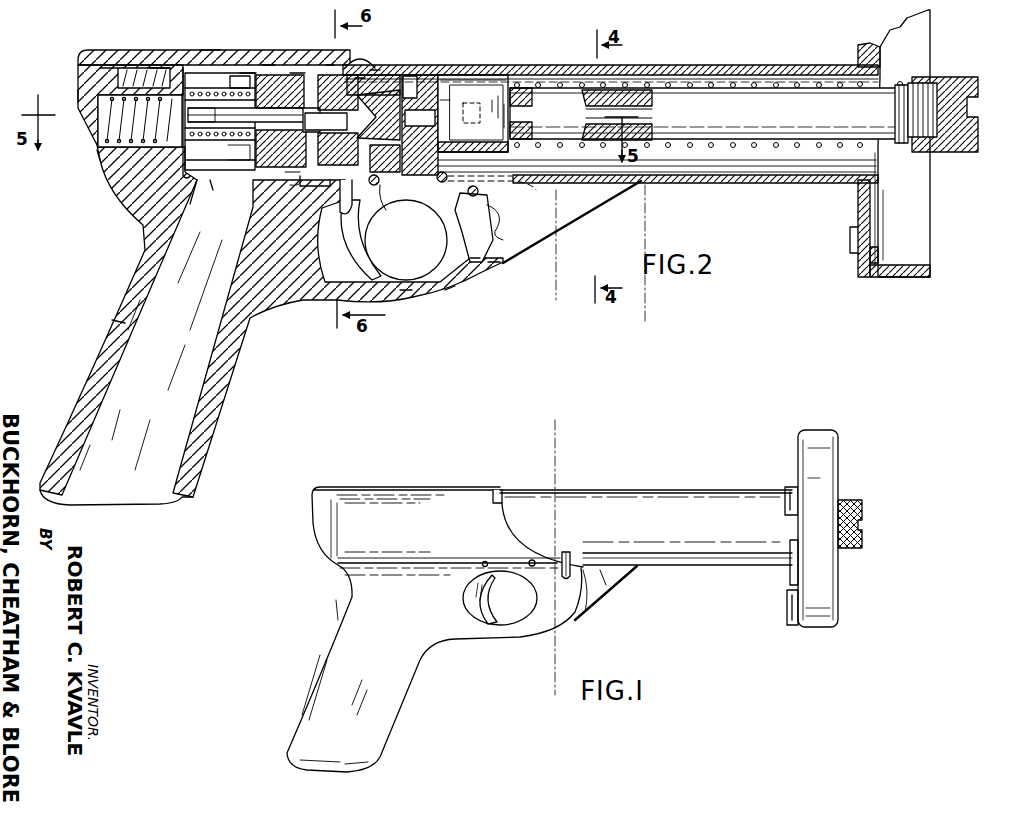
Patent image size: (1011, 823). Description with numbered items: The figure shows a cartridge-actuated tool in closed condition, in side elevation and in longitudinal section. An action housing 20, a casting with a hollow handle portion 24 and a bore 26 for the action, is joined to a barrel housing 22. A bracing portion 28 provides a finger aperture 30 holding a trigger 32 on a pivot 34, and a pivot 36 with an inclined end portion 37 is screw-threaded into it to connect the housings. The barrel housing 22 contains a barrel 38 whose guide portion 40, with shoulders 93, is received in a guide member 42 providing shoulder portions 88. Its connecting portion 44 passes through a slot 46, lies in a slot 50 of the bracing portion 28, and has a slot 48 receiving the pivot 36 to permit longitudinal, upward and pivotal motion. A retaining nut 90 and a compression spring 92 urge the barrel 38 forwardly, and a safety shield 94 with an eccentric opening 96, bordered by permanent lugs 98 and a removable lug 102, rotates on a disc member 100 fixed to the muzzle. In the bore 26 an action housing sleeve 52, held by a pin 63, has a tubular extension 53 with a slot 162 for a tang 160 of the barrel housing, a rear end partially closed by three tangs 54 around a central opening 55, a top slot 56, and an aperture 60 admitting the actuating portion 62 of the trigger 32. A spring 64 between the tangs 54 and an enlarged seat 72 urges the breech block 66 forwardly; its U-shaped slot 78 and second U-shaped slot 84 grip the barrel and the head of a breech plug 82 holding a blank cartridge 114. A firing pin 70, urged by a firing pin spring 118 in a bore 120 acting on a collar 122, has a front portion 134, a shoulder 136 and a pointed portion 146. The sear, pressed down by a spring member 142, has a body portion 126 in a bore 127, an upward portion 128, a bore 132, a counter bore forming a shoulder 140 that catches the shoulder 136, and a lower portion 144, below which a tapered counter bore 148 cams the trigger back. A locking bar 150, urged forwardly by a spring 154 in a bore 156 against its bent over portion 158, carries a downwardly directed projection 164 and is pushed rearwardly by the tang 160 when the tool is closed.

In FIG. 2, the action housing 20 is at (210, 49).
In FIG. 1, the action housing 20 is at (414, 483).
In FIG. 2, the barrel housing 22 is at (755, 65).
In FIG. 1, the barrel housing 22 is at (669, 489).
In FIG. 2, the hollow handle portion 24 is at (110, 318).
In FIG. 1, the hollow handle portion 24 is at (336, 658).
In FIG. 2, the bore 26 is at (212, 183).
In FIG. 2, the bracing portion 28 is at (450, 290).
In FIG. 1, the bracing portion 28 is at (590, 592).
In FIG. 2, the finger aperture 30 is at (405, 292).
In FIG. 2, the trigger 32 is at (376, 272).
In FIG. 1, the trigger 32 is at (478, 630).
In FIG. 2, the pivot 34 is at (372, 216).
In FIG. 1, the pivot 34 is at (490, 585).
In FIG. 2, the pivot 36 is at (497, 216).
In FIG. 1, the pivot 36 is at (580, 590).
In FIG. 1, the inclined end portion 37 is at (606, 580).
In FIG. 2, the barrel 38 is at (796, 139).
In FIG. 2, the guide portion 40 is at (505, 76).
In FIG. 2, the guide member 42 is at (485, 90).
In FIG. 2, the connecting portion 44 is at (549, 222).
In FIG. 1, the connecting portion 44 is at (629, 573).
In FIG. 2, the slot 46 is at (528, 190).
In FIG. 2, the slot 48 is at (490, 263).
In FIG. 2, the slot 50 is at (478, 262).
In FIG. 2, the action housing sleeve 52 is at (188, 198).
In FIG. 2, the tubular extension 53 is at (386, 200).
In FIG. 1, the tubular extension 53 is at (503, 491).
In FIG. 2, the tangs 54 is at (220, 121).
In FIG. 2, the central opening 55 is at (201, 116).
In FIG. 2, the slot 56 is at (252, 71).
In FIG. 2, the aperture 60 is at (285, 176).
In FIG. 2, the actuating portion 62 is at (289, 187).
In FIG. 2, the pin 63 is at (446, 196).
In FIG. 1, the pin 63 is at (534, 560).
In FIG. 2, the spring 64 is at (239, 151).
In FIG. 2, the breech block 66 is at (300, 72).
In FIG. 2, the firing pin rod 70 is at (246, 116).
In FIG. 2, the enlarged rearward bore end 72 is at (237, 88).
In FIG. 2, the U-shaped slot 78 is at (436, 180).
In FIG. 2, the breech plug 82 is at (401, 77).
In FIG. 2, the second U-shaped slot 84 is at (448, 147).
In FIG. 2, the shoulder portions 88 is at (505, 158).
In FIG. 2, the retaining nut 90 is at (963, 77).
In FIG. 1, the retaining nut 90 is at (850, 501).
In FIG. 2, the compression spring 92 is at (705, 82).
In FIG. 2, the shoulders 93 is at (452, 76).
In FIG. 2, the safety shield 94 is at (914, 284).
In FIG. 1, the safety shield 94 is at (839, 433).
In FIG. 2, the eccentric circular opening 96 is at (877, 248).
In FIG. 2, the permanent lugs 98 is at (856, 250).
In FIG. 1, the permanent lugs 98 is at (787, 612).
In FIG. 2, the disc member 100 is at (860, 201).
In FIG. 1, the disc member 100 is at (790, 580).
In FIG. 1, the removable lug 102 is at (789, 498).
In FIG. 2, the blank cartridge 114 is at (441, 100).
In FIG. 2, the firing pin spring 118 is at (78, 97).
In FIG. 2, the bore 120 is at (96, 160).
In FIG. 2, the collar 122 is at (140, 121).
In FIG. 2, the central body portion 126 is at (361, 77).
In FIG. 2, the circular bore 127 is at (300, 178).
In FIG. 2, the upwardly extending cylindrical portion 128 is at (336, 76).
In FIG. 2, the circular bore 132 is at (388, 184).
In FIG. 2, the front portion 134 is at (326, 121).
In FIG. 2, the shoulder 136 is at (280, 91).
In FIG. 2, the shoulder 140 is at (295, 120).
In FIG. 2, the spring member 142 is at (330, 64).
In FIG. 2, the lower portion 144 is at (348, 192).
In FIG. 2, the pointed portion 146 is at (373, 123).
In FIG. 2, the outwardly tapered counter bore 148 is at (281, 148).
In FIG. 2, the locking bar 150 is at (186, 70).
In FIG. 2, the spring 154 is at (130, 68).
In FIG. 2, the bore 156 is at (110, 69).
In FIG. 2, the bent over portion 158 is at (162, 68).
In FIG. 2, the projecting tang 160 is at (368, 60).
In FIG. 2, the slot 162 is at (376, 69).
In FIG. 2, the downwardly directed projection 164 is at (270, 64).